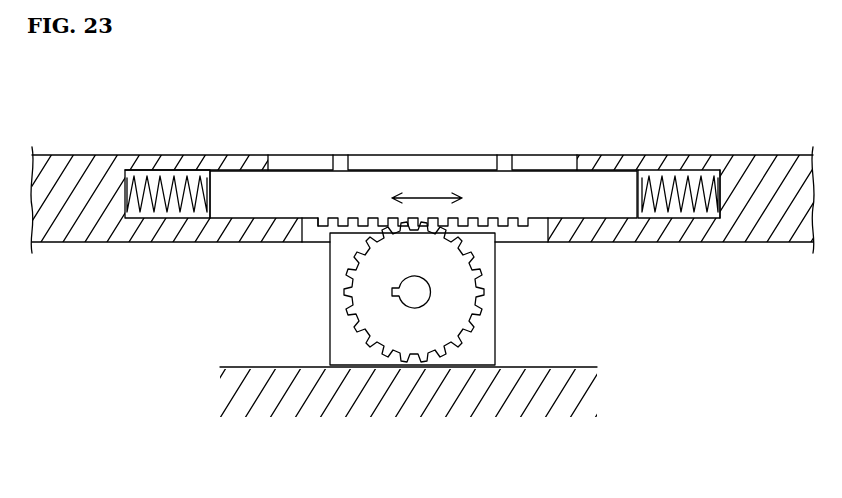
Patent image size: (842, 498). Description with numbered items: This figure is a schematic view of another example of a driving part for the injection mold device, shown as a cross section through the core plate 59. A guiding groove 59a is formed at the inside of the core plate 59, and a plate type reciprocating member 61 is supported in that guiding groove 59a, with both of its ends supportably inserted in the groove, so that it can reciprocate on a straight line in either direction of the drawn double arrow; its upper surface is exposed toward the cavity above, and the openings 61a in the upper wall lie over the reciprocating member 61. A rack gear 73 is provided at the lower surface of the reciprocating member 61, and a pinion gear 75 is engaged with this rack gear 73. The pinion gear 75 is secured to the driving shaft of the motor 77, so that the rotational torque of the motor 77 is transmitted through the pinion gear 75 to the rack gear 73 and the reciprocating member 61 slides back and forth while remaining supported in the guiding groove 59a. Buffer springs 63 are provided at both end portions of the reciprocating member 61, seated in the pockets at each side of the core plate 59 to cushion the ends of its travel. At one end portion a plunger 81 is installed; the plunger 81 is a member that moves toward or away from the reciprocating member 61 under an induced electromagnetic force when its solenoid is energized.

The core plate 59 is at (777, 172).
The guiding groove 59a is at (192, 177).
The reciprocating member 61 is at (393, 166).
The opening of slide member 61a is at (502, 168).
The buffer springs 63 is at (148, 182).
The rack gear 73 is at (336, 227).
The pinion gear 75 is at (422, 330).
The motor 77 is at (487, 340).
The plunger 81 is at (708, 184).